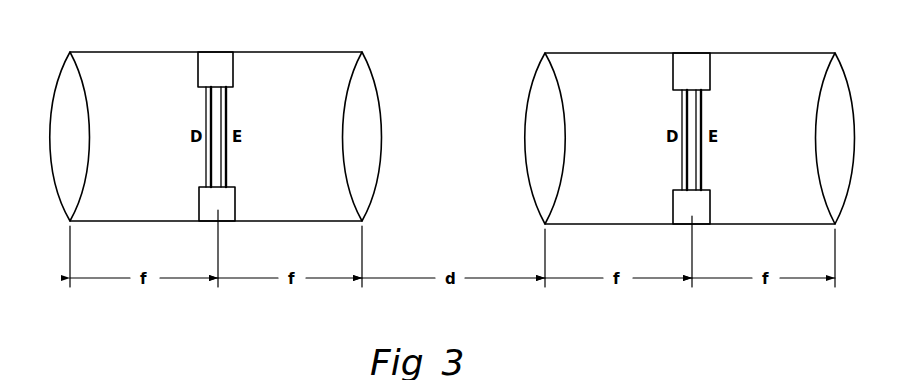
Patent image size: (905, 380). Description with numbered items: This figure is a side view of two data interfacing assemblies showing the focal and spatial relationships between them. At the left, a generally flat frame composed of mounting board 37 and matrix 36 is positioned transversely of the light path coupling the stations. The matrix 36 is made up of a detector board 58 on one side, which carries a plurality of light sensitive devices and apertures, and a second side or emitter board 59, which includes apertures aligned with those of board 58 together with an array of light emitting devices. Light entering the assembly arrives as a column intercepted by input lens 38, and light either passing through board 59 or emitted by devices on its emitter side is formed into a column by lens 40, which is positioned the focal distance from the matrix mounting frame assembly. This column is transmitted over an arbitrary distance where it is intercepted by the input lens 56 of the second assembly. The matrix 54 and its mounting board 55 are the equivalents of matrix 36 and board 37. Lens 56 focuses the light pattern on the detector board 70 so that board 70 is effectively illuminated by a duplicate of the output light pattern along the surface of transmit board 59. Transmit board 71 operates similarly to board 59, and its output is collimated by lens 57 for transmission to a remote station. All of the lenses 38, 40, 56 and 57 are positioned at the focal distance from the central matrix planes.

The matrix 36 is at (176, 115).
The mounting board 37 is at (212, 68).
The lens 38 is at (56, 72).
The lens 40 is at (364, 97).
The board 58 is at (209, 164).
The second side 59 is at (225, 113).
The matrix 54 is at (708, 114).
The mounting board 55 is at (686, 70).
The input lens 56 is at (538, 88).
The collimating lens 57 is at (827, 80).
The detector board 70 is at (682, 108).
The transmit board 71 is at (704, 176).